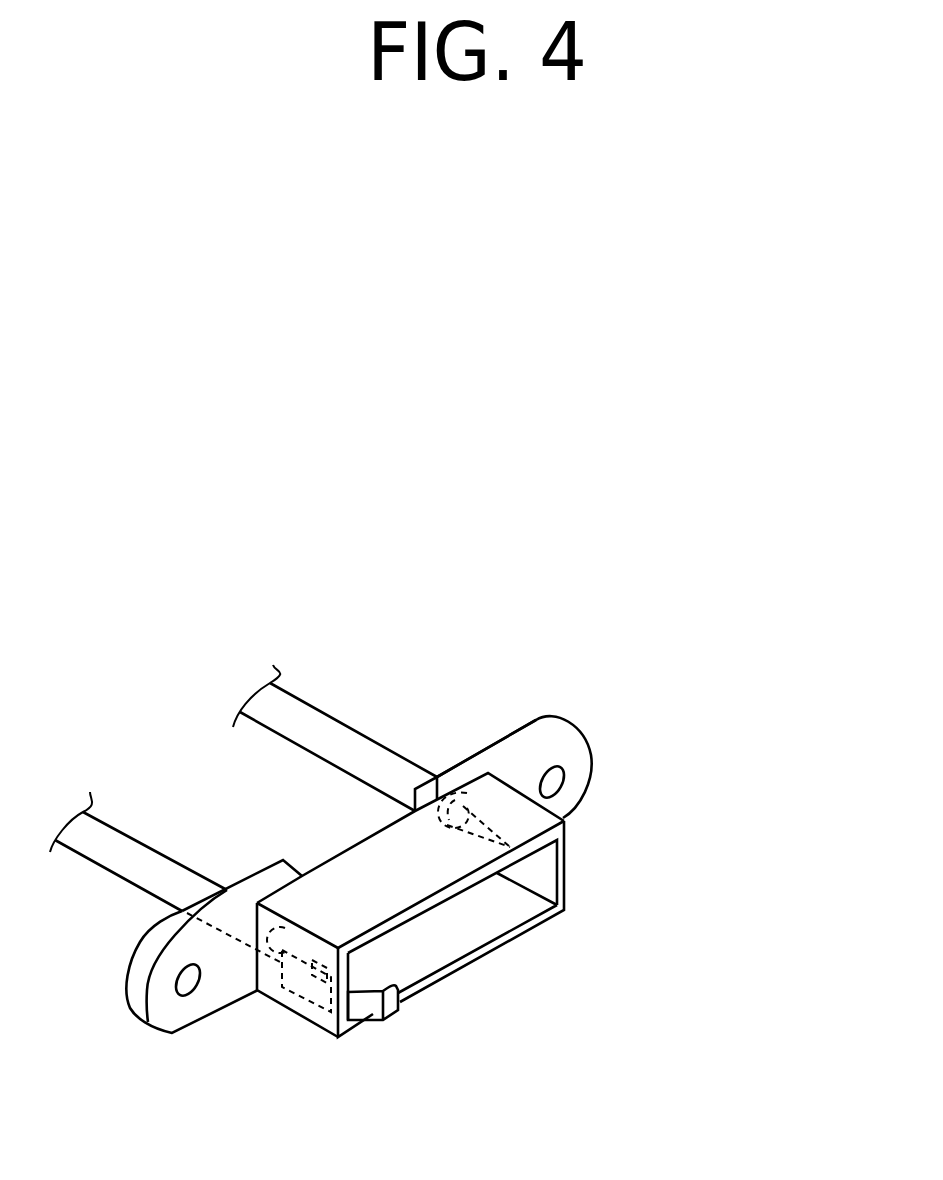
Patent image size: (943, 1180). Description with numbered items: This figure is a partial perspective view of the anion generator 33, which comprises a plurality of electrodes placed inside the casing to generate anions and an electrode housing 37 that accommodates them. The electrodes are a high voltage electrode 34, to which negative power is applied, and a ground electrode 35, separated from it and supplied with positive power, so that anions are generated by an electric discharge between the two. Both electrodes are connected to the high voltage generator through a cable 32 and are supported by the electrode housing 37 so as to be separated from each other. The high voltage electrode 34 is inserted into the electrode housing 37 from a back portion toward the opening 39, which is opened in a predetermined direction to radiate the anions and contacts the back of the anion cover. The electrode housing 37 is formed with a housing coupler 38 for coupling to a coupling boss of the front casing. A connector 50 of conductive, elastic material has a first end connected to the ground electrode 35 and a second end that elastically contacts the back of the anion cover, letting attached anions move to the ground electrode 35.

The cable 32 is at (243, 705).
The anion generator 33 is at (488, 841).
The high voltage electrode 34 is at (478, 817).
The ground electrode 35 is at (287, 915).
The electrode housing 37 is at (516, 905).
The housing coupler 38 is at (590, 793).
The opening 39 is at (708, 805).
The connector 50 is at (383, 1023).